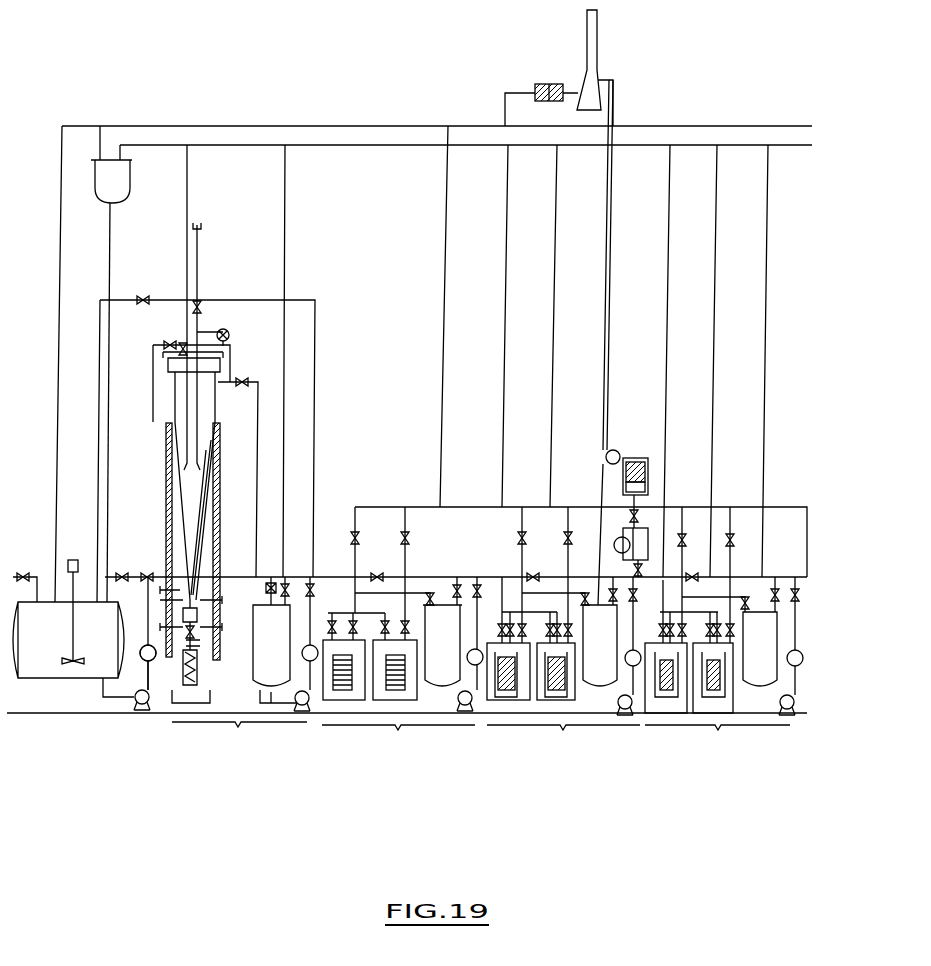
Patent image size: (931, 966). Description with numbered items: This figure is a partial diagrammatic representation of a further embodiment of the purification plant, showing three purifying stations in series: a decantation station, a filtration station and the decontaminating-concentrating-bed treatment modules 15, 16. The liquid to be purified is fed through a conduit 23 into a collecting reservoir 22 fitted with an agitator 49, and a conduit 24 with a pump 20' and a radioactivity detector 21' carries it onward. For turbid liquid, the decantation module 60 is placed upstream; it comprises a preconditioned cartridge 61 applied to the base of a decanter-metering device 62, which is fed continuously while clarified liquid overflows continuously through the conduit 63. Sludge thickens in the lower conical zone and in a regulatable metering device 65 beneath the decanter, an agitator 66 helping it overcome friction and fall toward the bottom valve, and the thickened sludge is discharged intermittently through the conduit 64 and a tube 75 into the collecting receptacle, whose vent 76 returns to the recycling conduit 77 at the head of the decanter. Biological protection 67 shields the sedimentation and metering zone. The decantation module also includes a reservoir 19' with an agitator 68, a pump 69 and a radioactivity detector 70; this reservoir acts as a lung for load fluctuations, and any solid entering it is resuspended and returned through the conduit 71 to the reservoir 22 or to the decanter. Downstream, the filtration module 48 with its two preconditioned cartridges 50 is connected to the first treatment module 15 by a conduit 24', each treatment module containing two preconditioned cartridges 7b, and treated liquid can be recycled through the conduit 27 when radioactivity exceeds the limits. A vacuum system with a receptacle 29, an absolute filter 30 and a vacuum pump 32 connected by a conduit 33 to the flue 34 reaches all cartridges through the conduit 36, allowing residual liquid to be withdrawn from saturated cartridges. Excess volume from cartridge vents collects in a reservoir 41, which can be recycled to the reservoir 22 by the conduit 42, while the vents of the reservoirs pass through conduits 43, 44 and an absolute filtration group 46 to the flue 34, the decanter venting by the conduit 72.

The vent conduit 44 is at (405, 126).
The vent conduit 43 is at (60, 278).
The reservoir 41 is at (119, 192).
The conduit 42 is at (110, 256).
The vent conduit 72 is at (190, 188).
The conduit 71 is at (318, 395).
The absolute filtration group 46 is at (543, 84).
The flue 34 is at (600, 68).
The conduit 33 is at (612, 280).
The vacuum pump 32 is at (616, 450).
The absolute filter 30 is at (640, 458).
The receptacle 29 is at (648, 530).
The conduit 36 is at (468, 507).
The conduit 24 is at (434, 505).
The decanter-metering device 62 is at (162, 391).
The recycling conduit 77 is at (220, 455).
The biological protection 67 is at (168, 485).
The agitator 66 is at (188, 582).
The metering device 65 is at (172, 592).
The vent 76 is at (200, 660).
The discharge conduit 64 is at (200, 643).
The conduit 63 is at (248, 380).
The tube 75 is at (172, 652).
The conduit 23 is at (15, 577).
The reservoir 22 is at (54, 646).
The agitator 49 is at (68, 668).
The radioactivity detector 21' is at (126, 739).
The pump 20' is at (152, 716).
The preconditioned cartridge 61 is at (170, 705).
The decantation module 60 is at (239, 737).
The reservoir 19' is at (259, 620).
The agitator 68 is at (262, 705).
The pump 69 is at (298, 710).
The radioactivity detector 70 is at (316, 690).
The conduit 27 is at (420, 580).
The conduit 24' is at (483, 568).
The preconditioned cartridge 50 is at (384, 710).
The filtration module 48 is at (398, 741).
The preconditioned cartridge 7b is at (554, 710).
The treatment module 15 is at (564, 667).
The treatment module 16 is at (724, 667).